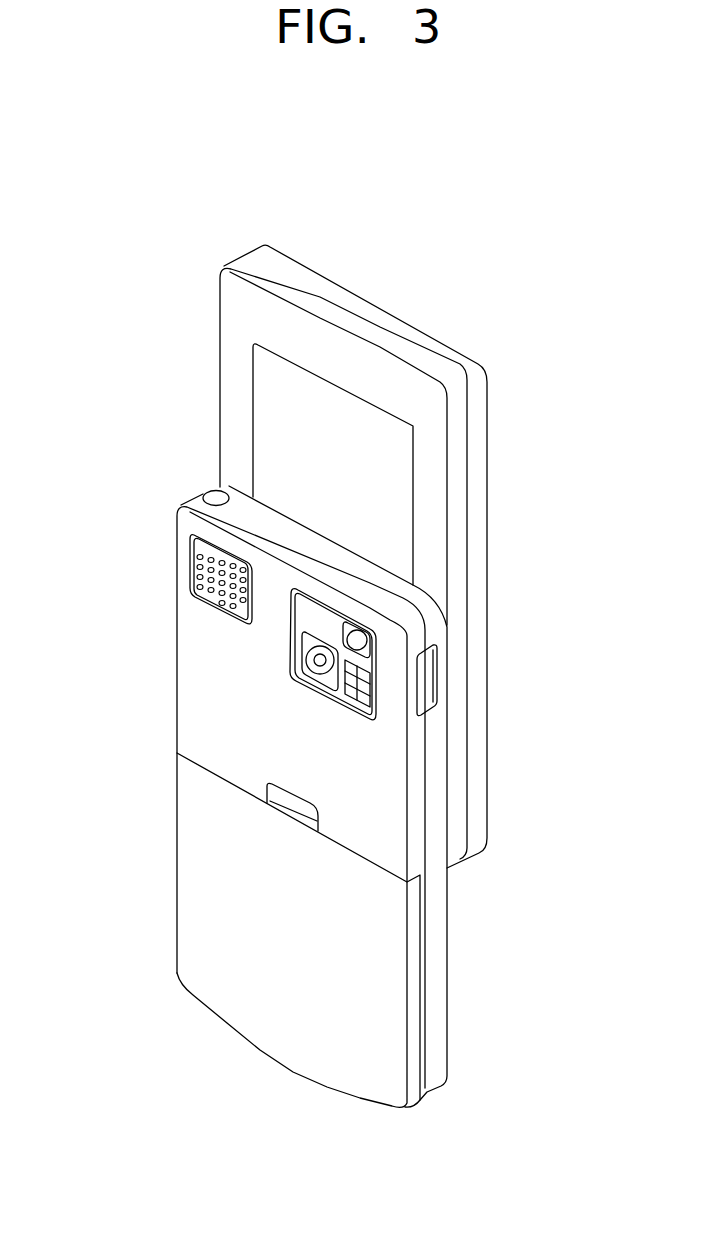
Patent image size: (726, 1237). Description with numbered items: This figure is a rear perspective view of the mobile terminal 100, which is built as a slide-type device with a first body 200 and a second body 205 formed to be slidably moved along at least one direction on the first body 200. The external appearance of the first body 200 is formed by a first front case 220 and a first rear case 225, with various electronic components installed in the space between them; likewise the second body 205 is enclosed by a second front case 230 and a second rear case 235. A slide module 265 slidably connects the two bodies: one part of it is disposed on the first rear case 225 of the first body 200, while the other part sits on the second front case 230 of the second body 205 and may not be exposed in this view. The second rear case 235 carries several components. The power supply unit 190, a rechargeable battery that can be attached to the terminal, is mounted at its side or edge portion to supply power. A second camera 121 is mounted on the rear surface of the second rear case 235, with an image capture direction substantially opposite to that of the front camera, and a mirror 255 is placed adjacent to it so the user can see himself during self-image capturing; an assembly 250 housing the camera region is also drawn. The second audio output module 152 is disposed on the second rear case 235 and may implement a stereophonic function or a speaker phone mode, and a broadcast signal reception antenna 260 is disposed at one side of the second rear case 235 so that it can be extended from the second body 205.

The mobile terminal 100 is at (500, 300).
The first body 200 is at (186, 378).
The first front case 220 is at (262, 253).
The first rear case 225 is at (243, 268).
The slide module 265 is at (253, 447).
The second body 205 is at (153, 668).
The second front case 230 is at (440, 893).
The second rear case 235 is at (415, 840).
The broadcast signal reception antenna 260 is at (210, 493).
The power supply unit 190 is at (192, 833).
The second audio output module 152 is at (200, 570).
The camera module window 250 is at (373, 713).
The second camera 121 is at (322, 688).
The mirror 255 is at (358, 638).